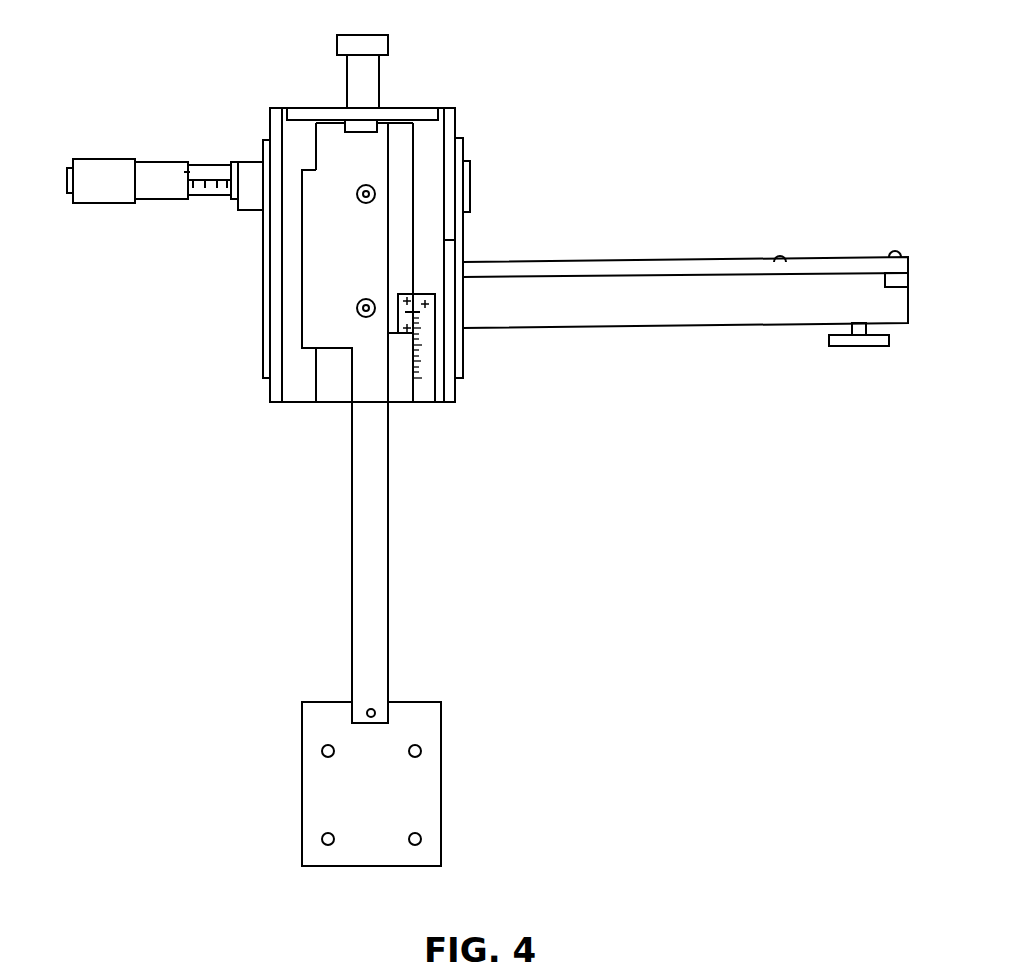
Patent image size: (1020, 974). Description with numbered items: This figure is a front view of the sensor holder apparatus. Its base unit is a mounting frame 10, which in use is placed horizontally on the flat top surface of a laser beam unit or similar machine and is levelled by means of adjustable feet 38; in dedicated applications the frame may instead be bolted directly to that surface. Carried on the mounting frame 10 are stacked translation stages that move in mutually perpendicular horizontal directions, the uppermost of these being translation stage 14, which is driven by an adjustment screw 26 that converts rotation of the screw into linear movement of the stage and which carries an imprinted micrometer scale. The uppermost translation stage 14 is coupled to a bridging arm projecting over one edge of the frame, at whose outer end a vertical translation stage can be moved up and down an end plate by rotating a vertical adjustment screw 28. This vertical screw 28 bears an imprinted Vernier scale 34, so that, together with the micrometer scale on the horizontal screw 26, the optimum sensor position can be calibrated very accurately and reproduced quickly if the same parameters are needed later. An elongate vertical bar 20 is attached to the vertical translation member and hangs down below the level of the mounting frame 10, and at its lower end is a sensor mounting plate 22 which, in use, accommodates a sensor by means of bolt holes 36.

The mounting frame 10 is at (810, 282).
The translation stage 14 is at (253, 170).
The vertical bar 20 is at (362, 499).
The sensor mounting plate 22 is at (322, 787).
The adjustment screw 26 is at (113, 170).
The adjustment screw 28 is at (377, 45).
The Vernier scale 34 is at (421, 378).
The bolt holes 36 is at (423, 748).
The adjustable feet 38 is at (862, 346).